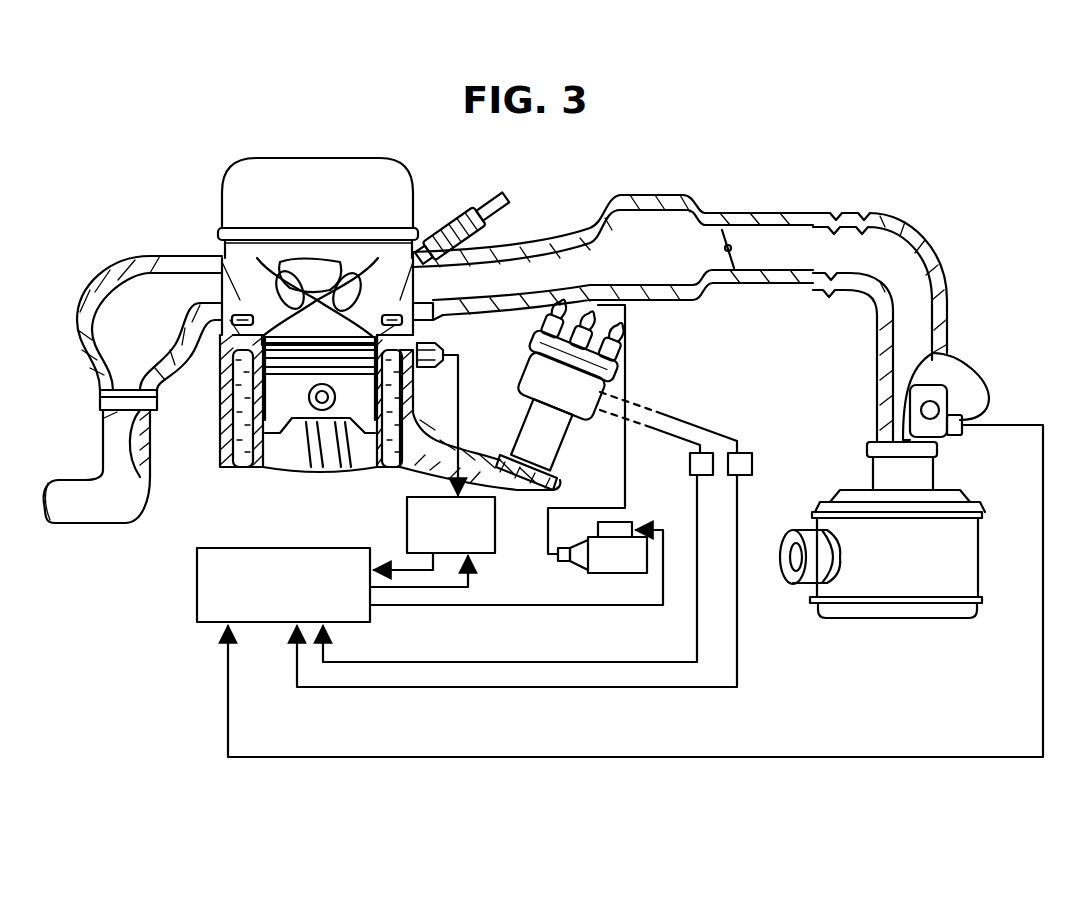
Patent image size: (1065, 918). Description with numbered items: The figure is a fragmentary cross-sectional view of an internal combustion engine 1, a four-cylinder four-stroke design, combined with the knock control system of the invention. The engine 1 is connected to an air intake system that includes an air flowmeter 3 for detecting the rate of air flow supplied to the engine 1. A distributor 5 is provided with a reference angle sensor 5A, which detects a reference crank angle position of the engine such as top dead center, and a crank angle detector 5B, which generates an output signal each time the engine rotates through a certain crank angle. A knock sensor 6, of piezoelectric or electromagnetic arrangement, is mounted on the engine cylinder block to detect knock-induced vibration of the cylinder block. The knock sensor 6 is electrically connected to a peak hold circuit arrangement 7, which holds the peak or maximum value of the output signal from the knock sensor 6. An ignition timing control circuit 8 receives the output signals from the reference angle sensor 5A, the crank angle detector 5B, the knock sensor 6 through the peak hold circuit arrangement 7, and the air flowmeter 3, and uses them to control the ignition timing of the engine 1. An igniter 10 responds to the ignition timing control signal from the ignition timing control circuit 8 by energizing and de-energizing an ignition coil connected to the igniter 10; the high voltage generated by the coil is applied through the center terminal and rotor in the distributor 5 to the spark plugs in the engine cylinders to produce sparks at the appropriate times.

The internal combustion engine 1 is at (280, 160).
The air flowmeter 3 is at (975, 375).
The distributor 5 is at (617, 343).
The reference angle sensor 5A is at (690, 466).
The crank angle detector 5B is at (736, 453).
The knock sensor 6 is at (445, 352).
The peak hold circuit arrangement 7 is at (407, 512).
The ignition timing control circuit 8 is at (313, 549).
The igniter 10 is at (625, 523).